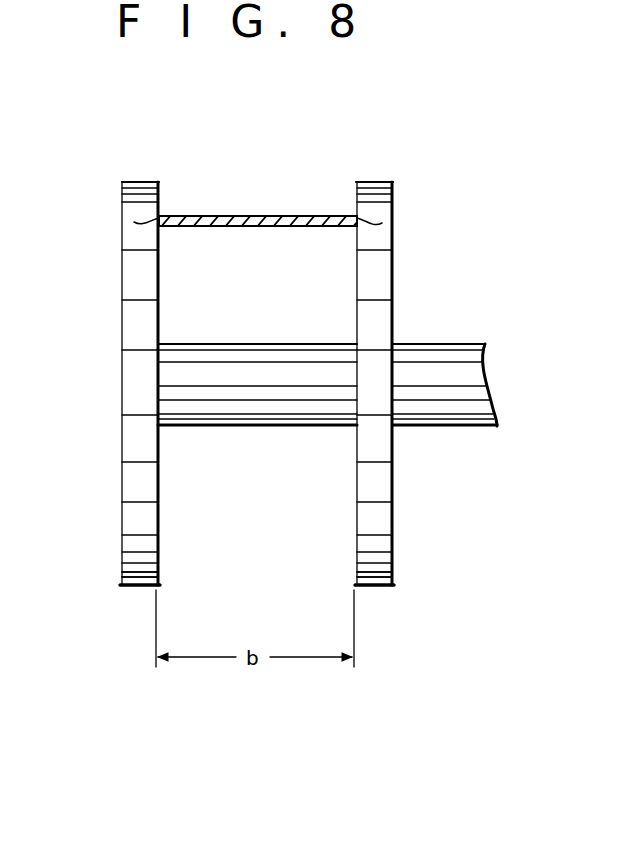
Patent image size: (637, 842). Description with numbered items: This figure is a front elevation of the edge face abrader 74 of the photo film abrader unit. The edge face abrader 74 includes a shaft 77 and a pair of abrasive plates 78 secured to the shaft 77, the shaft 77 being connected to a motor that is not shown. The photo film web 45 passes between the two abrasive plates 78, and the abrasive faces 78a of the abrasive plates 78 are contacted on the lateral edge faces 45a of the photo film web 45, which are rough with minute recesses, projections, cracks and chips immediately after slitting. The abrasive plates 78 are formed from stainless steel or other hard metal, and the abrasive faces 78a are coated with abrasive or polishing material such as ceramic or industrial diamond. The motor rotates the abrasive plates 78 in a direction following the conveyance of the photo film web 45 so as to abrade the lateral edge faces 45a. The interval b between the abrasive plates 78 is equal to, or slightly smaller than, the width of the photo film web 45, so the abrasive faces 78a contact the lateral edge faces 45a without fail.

The edge face abrader 74 is at (380, 179).
The photo film web 45 is at (212, 213).
The lateral edge faces 45a is at (142, 226).
The abrasive plates 78 is at (131, 281).
The abrasive faces 78a is at (356, 482).
The shaft 77 is at (456, 418).